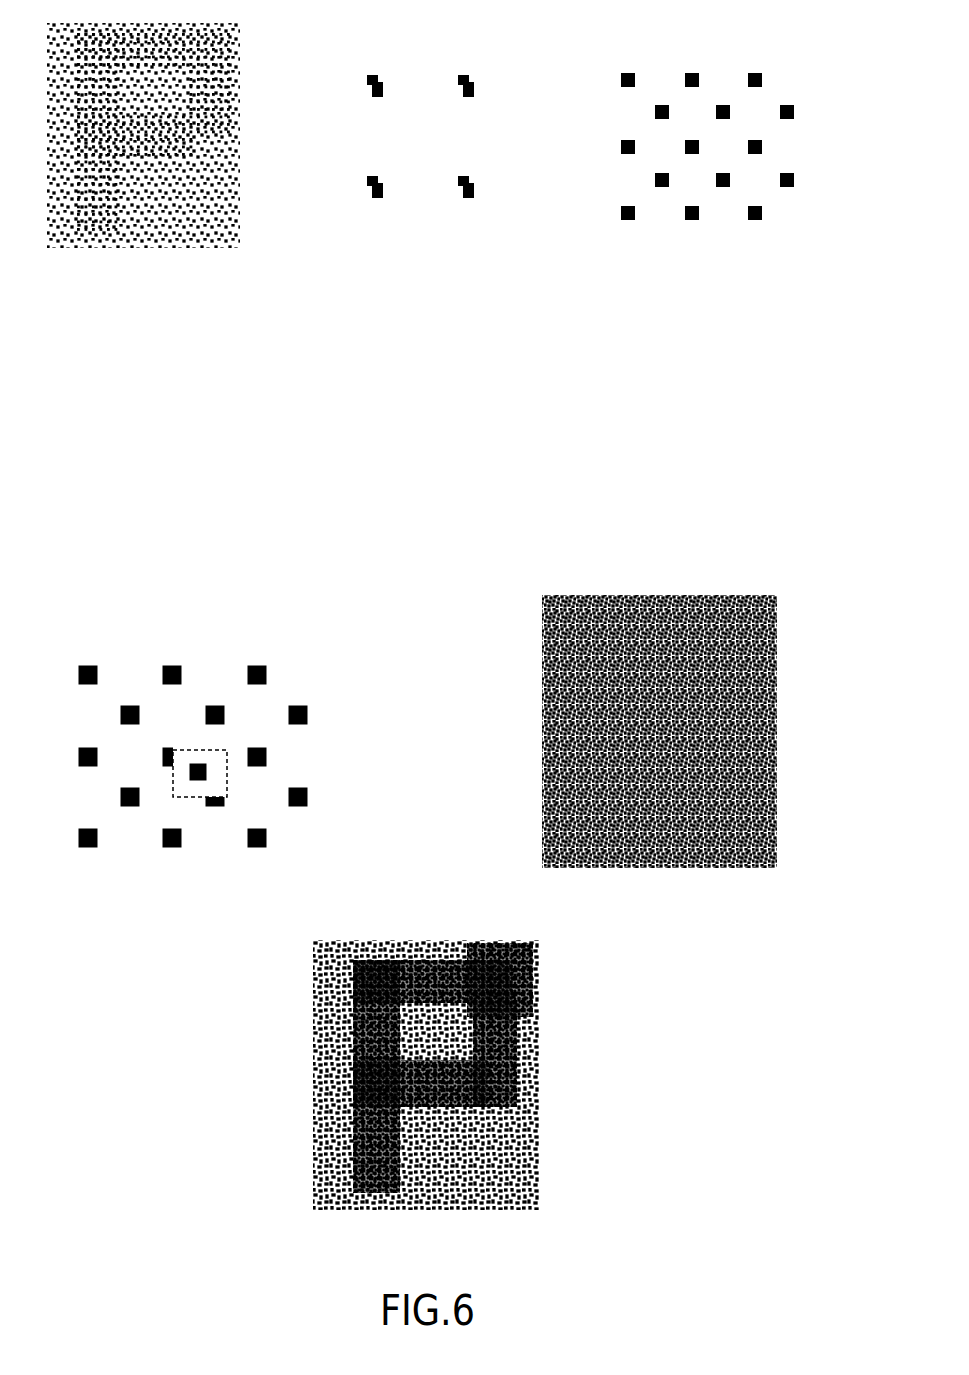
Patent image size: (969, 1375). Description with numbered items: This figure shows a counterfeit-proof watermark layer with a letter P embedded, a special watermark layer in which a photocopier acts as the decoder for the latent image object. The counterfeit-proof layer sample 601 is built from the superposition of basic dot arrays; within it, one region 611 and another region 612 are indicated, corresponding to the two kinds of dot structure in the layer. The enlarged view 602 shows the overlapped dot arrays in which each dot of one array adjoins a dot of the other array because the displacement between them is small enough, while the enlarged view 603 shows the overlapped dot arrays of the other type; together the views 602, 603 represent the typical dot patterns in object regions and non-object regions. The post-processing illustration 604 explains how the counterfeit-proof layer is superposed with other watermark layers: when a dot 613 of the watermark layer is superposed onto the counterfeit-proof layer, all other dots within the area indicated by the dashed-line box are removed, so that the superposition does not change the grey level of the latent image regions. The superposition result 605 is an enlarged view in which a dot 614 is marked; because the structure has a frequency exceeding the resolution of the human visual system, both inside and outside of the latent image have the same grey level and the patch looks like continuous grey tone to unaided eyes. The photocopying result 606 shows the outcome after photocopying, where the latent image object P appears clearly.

The counterfeit-proof layer sample 601 is at (176, 153).
The enlarged view of overlapped dot arrays in object region 602 is at (420, 178).
The enlarged view of overlapped dot arrays in non-object region 603 is at (707, 175).
The post-processing illustration 604 is at (242, 786).
The superposition result 605 is at (691, 748).
The photocopying result 606 is at (426, 1094).
The regular halftone dot region 611 is at (193, 105).
The irregular noise dot region 612 is at (192, 180).
The dot of the watermark layer 613 is at (208, 772).
The random noise dot 614 is at (727, 700).